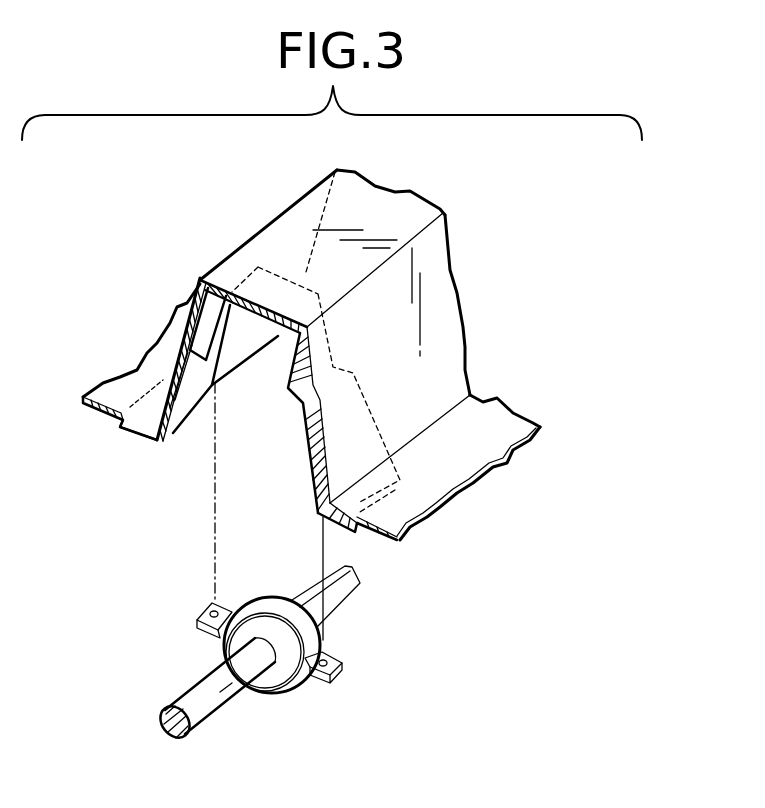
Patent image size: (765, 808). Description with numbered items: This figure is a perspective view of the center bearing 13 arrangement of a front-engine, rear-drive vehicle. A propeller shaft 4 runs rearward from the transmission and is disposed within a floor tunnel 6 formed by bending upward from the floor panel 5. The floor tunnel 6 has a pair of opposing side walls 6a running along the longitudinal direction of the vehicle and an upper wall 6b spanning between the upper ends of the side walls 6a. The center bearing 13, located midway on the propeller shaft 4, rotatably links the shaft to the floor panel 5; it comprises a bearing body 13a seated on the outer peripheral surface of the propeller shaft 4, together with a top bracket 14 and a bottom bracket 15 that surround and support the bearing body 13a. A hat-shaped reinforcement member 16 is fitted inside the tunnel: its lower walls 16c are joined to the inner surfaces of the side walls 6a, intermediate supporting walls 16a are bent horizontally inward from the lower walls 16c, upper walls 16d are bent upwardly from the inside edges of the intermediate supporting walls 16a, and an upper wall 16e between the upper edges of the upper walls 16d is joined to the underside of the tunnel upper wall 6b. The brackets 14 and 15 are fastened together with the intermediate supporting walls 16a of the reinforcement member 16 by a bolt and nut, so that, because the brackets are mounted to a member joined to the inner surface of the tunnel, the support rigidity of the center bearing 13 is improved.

The propeller shaft 4 is at (217, 677).
The floor panel 5 is at (490, 423).
The floor tunnel 6 is at (388, 217).
The side walls 6a is at (188, 313).
The upper wall 6b is at (308, 200).
The center bearing 13 is at (295, 656).
The bearing body 13a is at (257, 622).
The top bracket 14 is at (303, 612).
The bottom bracket 15 is at (273, 697).
The reinforcement member 16 is at (264, 412).
The intermediate supporting walls 16a is at (158, 400).
The lower walls 16c is at (180, 393).
The upper walls 16d is at (233, 328).
The upper wall 16e is at (258, 318).